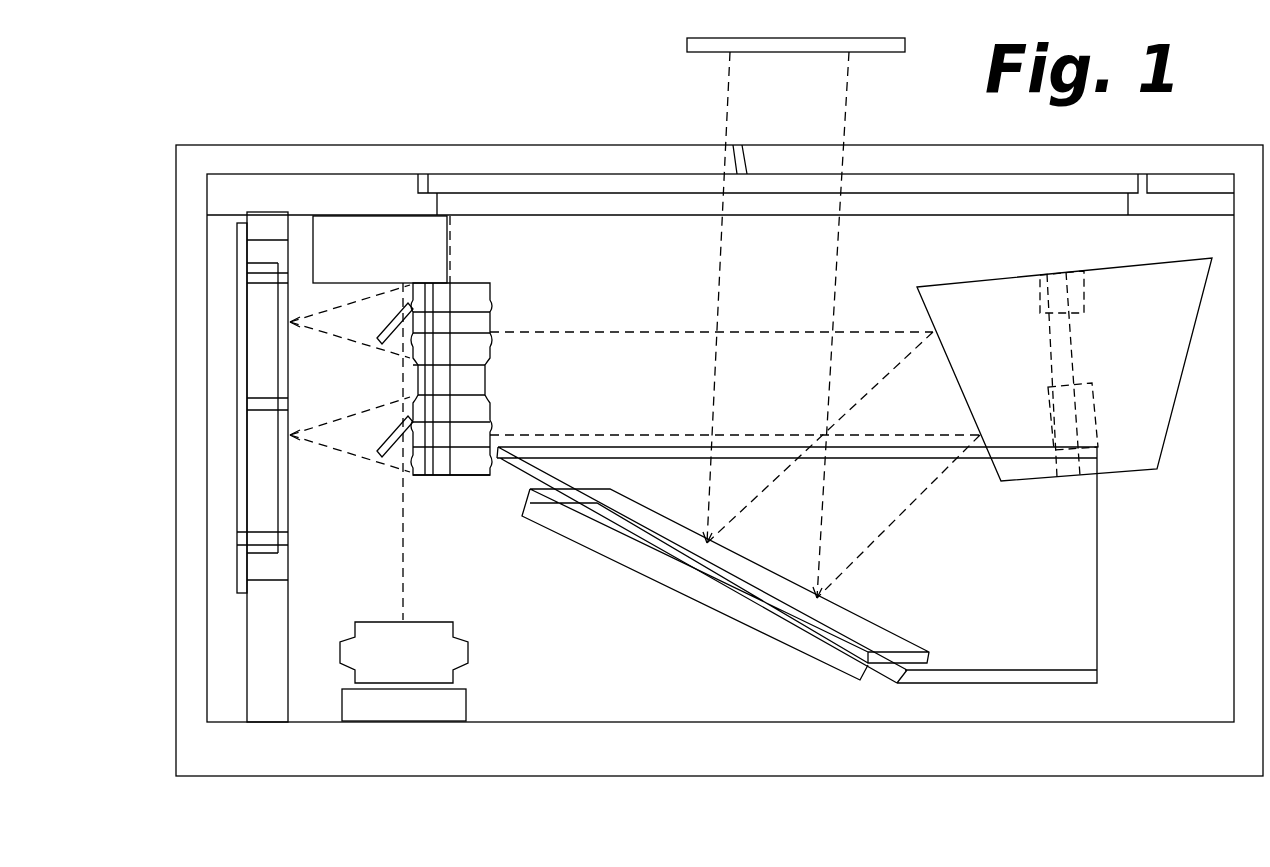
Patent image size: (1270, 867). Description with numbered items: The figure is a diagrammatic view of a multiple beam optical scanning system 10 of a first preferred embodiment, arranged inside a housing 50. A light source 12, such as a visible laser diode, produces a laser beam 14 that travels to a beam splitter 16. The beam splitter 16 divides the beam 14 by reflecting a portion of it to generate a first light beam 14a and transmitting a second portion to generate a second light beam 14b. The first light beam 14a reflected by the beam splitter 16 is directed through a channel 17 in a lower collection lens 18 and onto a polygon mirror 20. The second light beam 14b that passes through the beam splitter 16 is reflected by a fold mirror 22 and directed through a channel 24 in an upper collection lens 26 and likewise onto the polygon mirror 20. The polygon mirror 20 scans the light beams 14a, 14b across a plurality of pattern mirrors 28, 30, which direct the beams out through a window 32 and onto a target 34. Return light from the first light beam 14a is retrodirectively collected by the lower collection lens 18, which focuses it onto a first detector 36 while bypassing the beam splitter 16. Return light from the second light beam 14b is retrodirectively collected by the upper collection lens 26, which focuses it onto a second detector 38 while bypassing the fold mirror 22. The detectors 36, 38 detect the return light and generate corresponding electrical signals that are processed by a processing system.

The multiple beam optical scanning system 10 is at (271, 112).
The light source 12 is at (438, 655).
The laser beam 14 is at (402, 545).
The first light beam 14a is at (578, 434).
The second light beam 14b is at (406, 369).
The beam splitter 16 is at (378, 430).
The channel 17 is at (474, 432).
The lower collection lens 18 is at (468, 462).
The polygon mirror 20 is at (1140, 285).
The fold mirror 22 is at (388, 322).
The channel 24 is at (478, 322).
The upper collection lens 26 is at (470, 293).
The pattern mirror 28 is at (1008, 670).
The pattern mirror 30 is at (868, 630).
The window 32 is at (483, 183).
The target 34 is at (771, 47).
The first detector 36 is at (262, 485).
The second detector 38 is at (262, 355).
The housing 50 is at (250, 752).